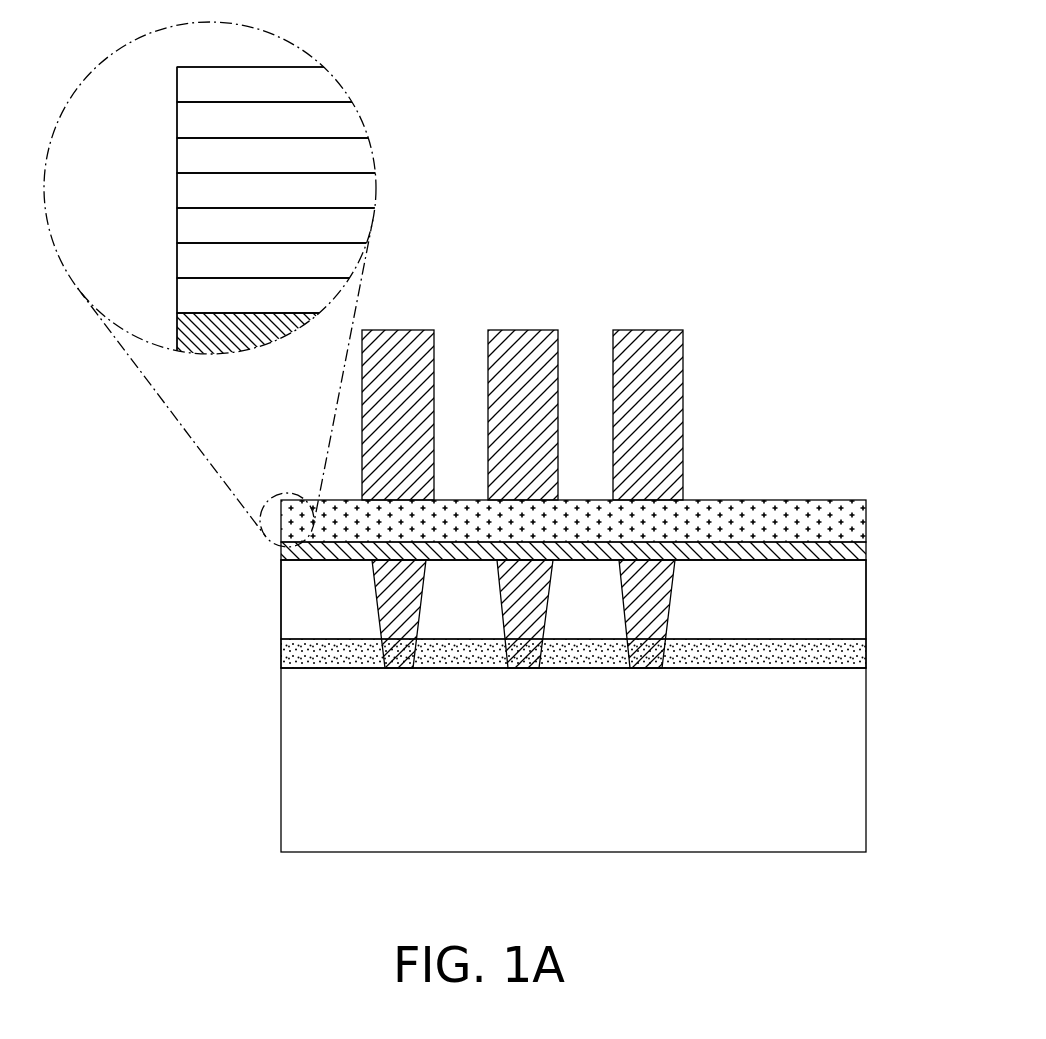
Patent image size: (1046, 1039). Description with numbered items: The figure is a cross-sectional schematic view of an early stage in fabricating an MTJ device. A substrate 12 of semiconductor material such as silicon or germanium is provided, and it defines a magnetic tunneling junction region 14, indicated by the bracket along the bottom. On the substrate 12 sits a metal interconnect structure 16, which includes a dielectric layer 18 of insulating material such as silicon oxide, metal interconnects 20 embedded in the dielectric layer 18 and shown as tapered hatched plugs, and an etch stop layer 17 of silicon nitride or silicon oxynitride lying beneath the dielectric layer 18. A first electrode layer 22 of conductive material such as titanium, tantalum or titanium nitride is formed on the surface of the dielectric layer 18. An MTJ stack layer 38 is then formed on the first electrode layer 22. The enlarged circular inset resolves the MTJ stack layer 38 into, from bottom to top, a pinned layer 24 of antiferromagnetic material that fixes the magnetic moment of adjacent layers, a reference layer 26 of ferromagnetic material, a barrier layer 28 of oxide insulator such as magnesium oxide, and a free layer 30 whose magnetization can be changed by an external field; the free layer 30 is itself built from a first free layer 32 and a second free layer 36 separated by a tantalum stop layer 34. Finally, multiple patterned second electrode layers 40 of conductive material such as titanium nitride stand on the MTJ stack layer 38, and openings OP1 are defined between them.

The substrate 12 is at (843, 838).
The magnetic tunneling junction region 14 is at (723, 858).
The metal interconnect structure 16 is at (918, 586).
The etch stop layer 17 is at (862, 657).
The dielectric layer 18 is at (862, 600).
The metal interconnects 20 is at (649, 665).
The first electrode layer 22 is at (862, 550).
The pinned layer 24 is at (254, 295).
The reference layer 26 is at (184, 260).
The barrier layer 28 is at (184, 225).
The free layer 30 is at (184, 190).
The first free layer 32 is at (184, 154).
The stop layer 34 is at (184, 119).
The second free layer 36 is at (184, 83).
The MTJ stack layer 38 is at (862, 522).
The patterned second electrode layer 40 is at (680, 415).
The openings OP1 is at (462, 348).